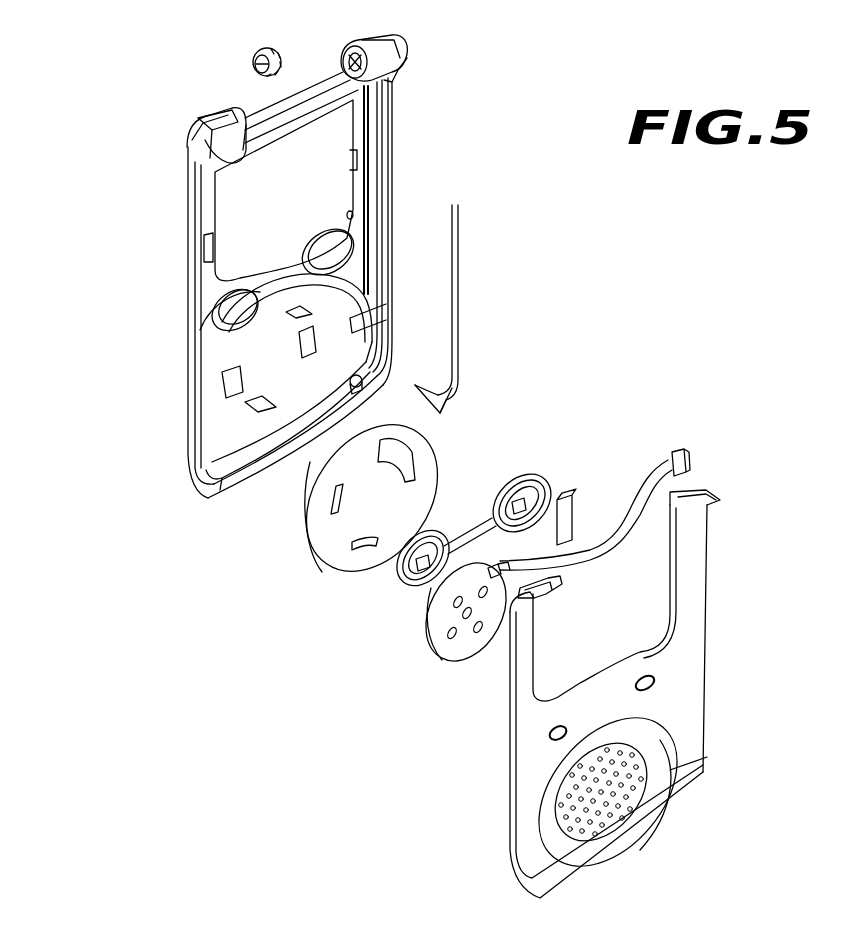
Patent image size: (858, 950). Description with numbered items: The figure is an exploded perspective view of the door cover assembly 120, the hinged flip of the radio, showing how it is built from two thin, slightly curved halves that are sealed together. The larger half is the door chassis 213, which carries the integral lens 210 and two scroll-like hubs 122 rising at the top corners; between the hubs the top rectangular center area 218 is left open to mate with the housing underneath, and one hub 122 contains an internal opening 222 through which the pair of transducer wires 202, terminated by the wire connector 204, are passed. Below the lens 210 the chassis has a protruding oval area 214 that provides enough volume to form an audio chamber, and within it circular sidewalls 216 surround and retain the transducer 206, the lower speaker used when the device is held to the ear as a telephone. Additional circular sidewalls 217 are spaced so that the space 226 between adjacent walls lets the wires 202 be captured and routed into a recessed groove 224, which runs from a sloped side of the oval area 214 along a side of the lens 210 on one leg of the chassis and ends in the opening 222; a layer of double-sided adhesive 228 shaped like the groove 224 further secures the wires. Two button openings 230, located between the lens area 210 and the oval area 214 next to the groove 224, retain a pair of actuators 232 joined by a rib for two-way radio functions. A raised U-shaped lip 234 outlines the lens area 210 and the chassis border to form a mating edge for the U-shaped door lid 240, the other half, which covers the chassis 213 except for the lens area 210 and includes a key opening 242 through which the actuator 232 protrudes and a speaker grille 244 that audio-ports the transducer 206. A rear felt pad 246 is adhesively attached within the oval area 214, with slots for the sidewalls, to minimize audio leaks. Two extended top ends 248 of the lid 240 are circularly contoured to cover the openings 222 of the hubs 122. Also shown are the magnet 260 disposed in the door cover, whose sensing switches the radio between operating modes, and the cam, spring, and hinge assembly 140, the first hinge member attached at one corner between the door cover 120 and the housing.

The door cover assembly 120 is at (102, 747).
The hub 122 is at (398, 57).
The cam, spring, and hinge assembly 140 is at (256, 62).
The transducer wires 202 is at (654, 472).
The wire connector 204 is at (684, 460).
The transducer 206 is at (446, 650).
The integral lens 210 is at (243, 225).
The door chassis 213 is at (213, 489).
The oval area 214 is at (272, 420).
The circular sidewalls 216 is at (305, 356).
The circular sidewalls 217 is at (230, 376).
The rectangular center area 218 is at (245, 121).
The internal opening 222 is at (400, 72).
The recessed groove 224 is at (355, 275).
The space 226 is at (308, 330).
The double-sided adhesive 228 is at (446, 388).
The button opening 230 is at (226, 311).
The actuator 232 is at (530, 479).
The U-shaped lip 234 is at (392, 136).
The U-shaped door lid 240 is at (632, 694).
The key opening 242 is at (556, 738).
The speaker grille 244 is at (648, 780).
The rear felt pad 246 is at (330, 556).
The extended top ends 248 is at (712, 497).
The magnet 260 is at (568, 516).